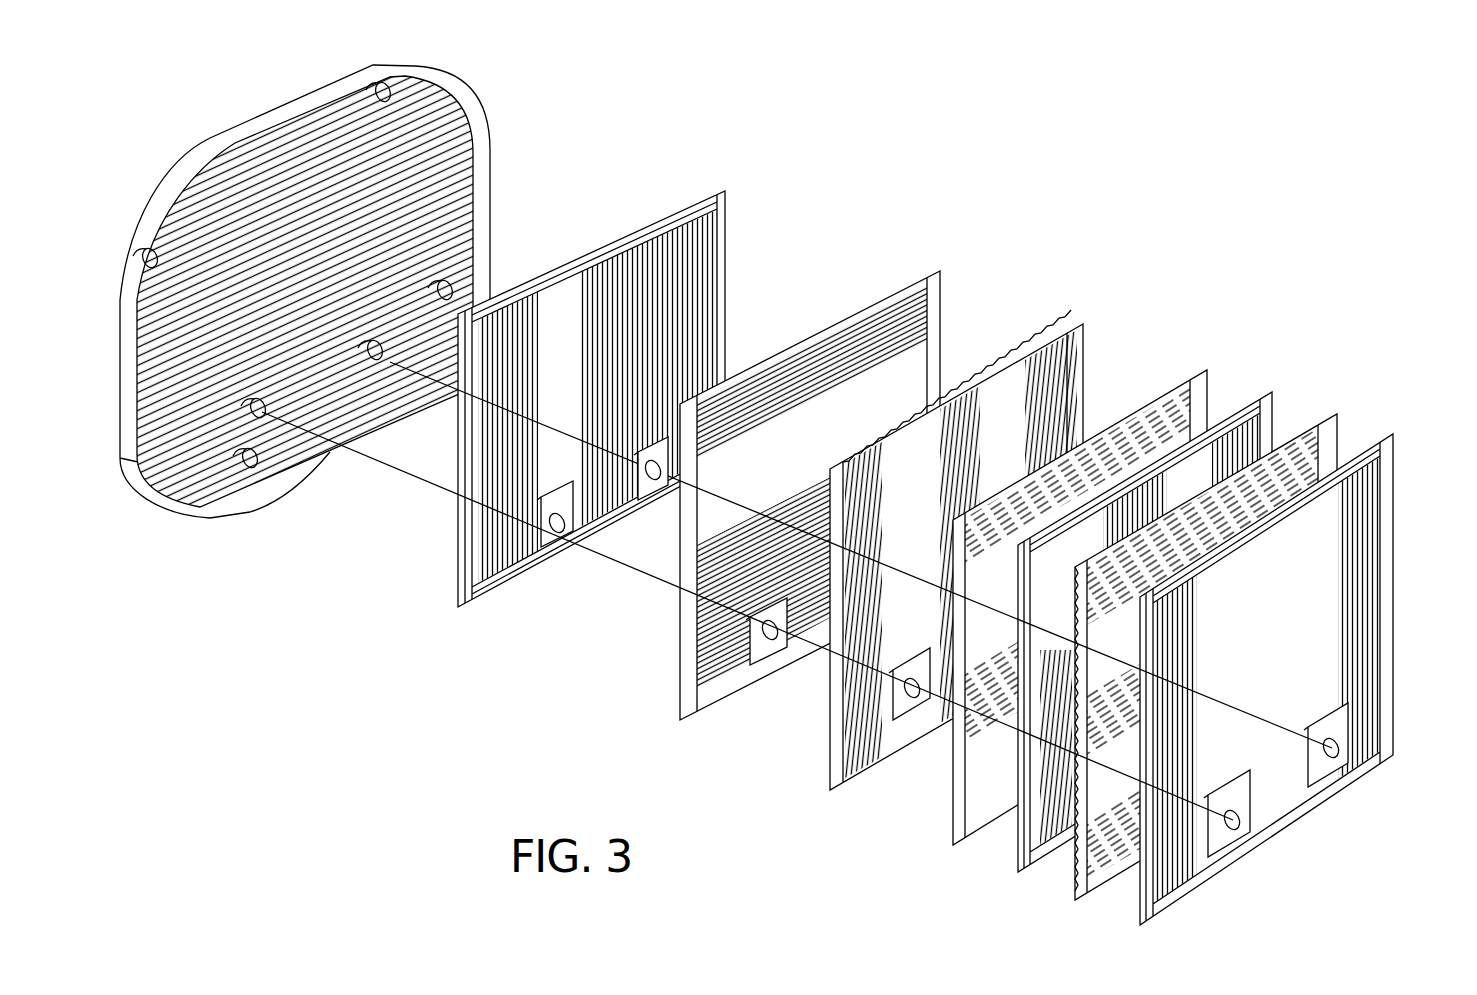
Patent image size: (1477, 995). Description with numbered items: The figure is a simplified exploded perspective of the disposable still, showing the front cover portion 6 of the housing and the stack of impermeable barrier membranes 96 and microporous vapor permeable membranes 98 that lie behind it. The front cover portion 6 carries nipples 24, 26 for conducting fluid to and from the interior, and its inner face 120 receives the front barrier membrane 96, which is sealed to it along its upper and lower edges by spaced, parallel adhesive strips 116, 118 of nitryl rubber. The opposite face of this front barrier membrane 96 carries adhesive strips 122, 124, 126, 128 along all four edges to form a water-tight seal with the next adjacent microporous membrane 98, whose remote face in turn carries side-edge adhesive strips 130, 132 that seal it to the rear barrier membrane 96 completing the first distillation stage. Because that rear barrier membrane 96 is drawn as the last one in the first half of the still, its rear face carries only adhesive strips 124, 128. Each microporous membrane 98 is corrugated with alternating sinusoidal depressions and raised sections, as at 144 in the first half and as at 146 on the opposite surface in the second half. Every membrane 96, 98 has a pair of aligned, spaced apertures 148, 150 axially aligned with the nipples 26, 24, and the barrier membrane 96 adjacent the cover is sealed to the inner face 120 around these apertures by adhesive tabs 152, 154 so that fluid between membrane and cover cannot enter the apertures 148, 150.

The front cover portion 6 is at (243, 520).
The nipple 24 is at (393, 363).
The nipple 26 is at (270, 407).
The impermeable barrier membrane 96 is at (688, 240).
The microporous vapor permeable membrane 98 is at (903, 283).
The adhesive strip 116 is at (470, 300).
The adhesive strip 118 is at (1377, 760).
The inner face 120 is at (465, 150).
The adhesive strip 122 is at (717, 196).
The adhesive strip 124 is at (723, 267).
The adhesive strip 126 is at (620, 527).
The adhesive strip 128 is at (1133, 903).
The adhesive strip 130 is at (937, 297).
The adhesive strip 132 is at (1323, 413).
The corrugations 144 is at (870, 367).
The corrugations 146 is at (980, 373).
The aperture 148 is at (1223, 840).
The aperture 150 is at (1327, 787).
The adhesive tab 152 is at (1247, 833).
The adhesive tab 154 is at (1340, 727).